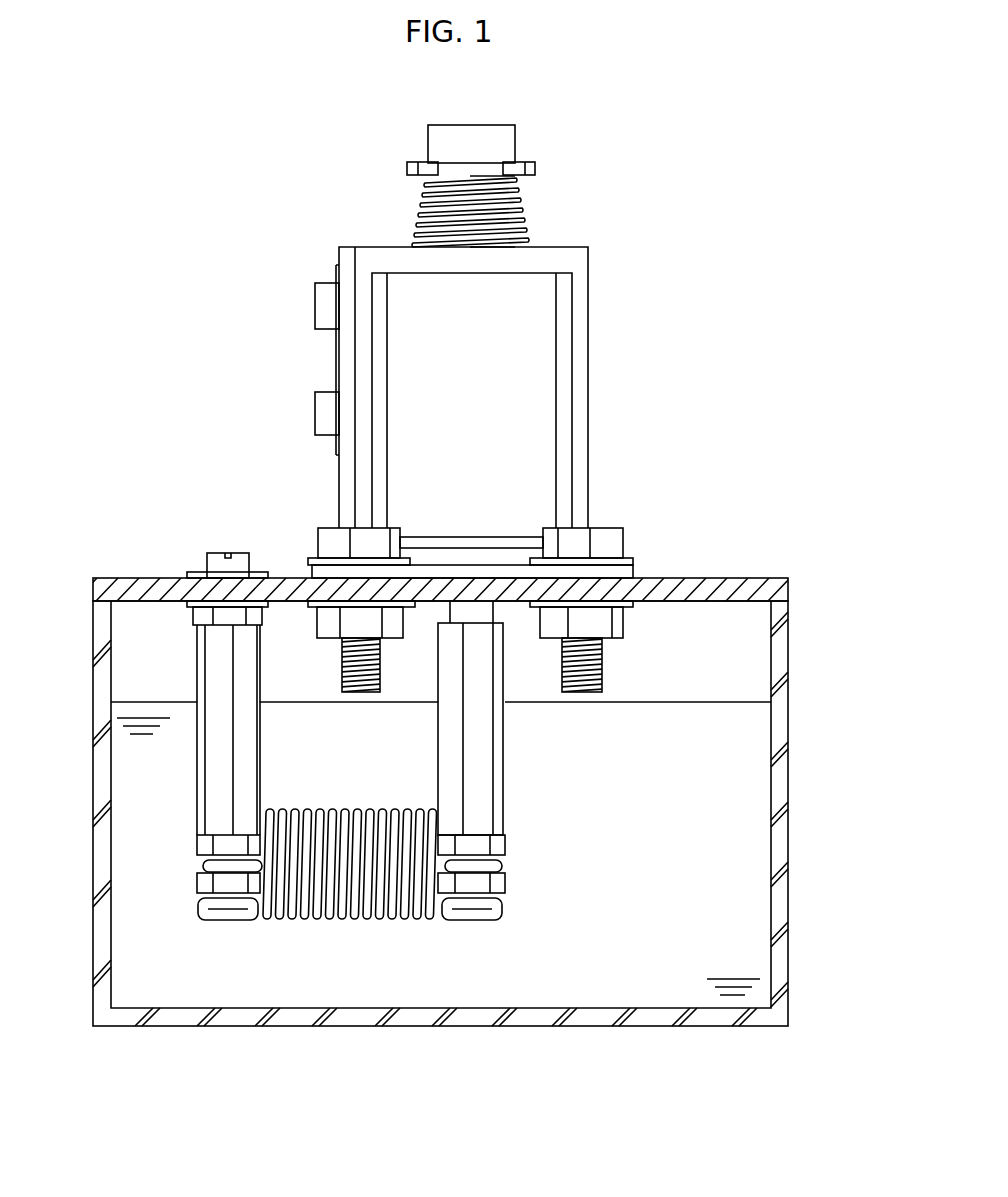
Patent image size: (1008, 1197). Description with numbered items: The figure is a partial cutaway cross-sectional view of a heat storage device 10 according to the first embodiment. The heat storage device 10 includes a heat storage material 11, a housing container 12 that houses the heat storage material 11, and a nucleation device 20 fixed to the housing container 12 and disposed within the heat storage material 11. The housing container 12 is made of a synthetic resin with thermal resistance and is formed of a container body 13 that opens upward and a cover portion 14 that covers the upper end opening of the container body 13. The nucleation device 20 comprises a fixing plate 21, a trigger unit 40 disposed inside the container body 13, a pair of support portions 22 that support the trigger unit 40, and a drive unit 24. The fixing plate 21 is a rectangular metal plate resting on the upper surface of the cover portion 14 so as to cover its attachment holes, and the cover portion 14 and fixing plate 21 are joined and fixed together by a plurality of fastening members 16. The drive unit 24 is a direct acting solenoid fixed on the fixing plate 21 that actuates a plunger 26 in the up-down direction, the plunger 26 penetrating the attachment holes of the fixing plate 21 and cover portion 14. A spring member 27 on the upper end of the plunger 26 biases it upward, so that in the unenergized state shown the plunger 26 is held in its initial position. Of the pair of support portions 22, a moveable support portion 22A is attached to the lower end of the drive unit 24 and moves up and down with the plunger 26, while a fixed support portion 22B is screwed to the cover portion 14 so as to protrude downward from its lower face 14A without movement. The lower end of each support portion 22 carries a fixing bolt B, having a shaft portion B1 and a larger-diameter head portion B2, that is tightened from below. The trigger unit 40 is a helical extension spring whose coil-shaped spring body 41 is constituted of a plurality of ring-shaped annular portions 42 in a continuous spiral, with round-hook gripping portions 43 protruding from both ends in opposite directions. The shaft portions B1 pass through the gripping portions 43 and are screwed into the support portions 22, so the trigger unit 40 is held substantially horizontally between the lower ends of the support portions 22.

The heat storage device 10 is at (638, 352).
The heat storage material 11 is at (733, 792).
The housing container 12 is at (836, 565).
The container body 13 is at (778, 638).
The cover portion 14 is at (778, 590).
The lower face 14A is at (166, 606).
The fastening members 16 is at (332, 548).
The nucleation device 20 is at (326, 232).
The fixing plate 21 is at (468, 572).
The support portions 22 is at (470, 646).
The moveable support portion 22A is at (482, 757).
The fixed support portion 22B is at (217, 672).
The drive unit 24 is at (530, 328).
The plunger 26 is at (478, 612).
The spring member 27 is at (522, 212).
The trigger unit 40 is at (350, 949).
The spring body 41 is at (350, 957).
The annular portions 42 is at (318, 912).
The gripping portions 43 is at (225, 865).
The fixing bolt B is at (232, 912).
The shaft portion B1 is at (477, 873).
The head portion B2 is at (492, 918).